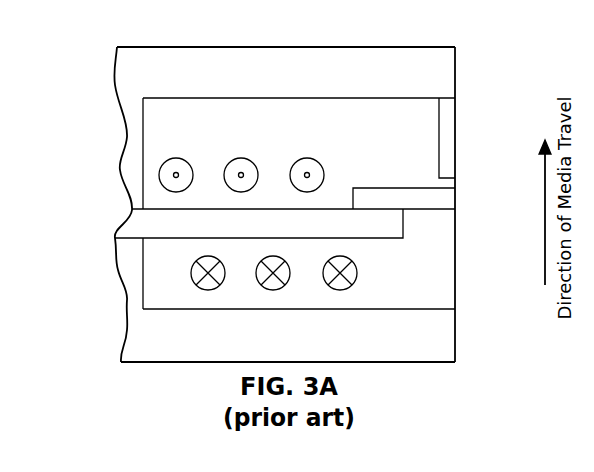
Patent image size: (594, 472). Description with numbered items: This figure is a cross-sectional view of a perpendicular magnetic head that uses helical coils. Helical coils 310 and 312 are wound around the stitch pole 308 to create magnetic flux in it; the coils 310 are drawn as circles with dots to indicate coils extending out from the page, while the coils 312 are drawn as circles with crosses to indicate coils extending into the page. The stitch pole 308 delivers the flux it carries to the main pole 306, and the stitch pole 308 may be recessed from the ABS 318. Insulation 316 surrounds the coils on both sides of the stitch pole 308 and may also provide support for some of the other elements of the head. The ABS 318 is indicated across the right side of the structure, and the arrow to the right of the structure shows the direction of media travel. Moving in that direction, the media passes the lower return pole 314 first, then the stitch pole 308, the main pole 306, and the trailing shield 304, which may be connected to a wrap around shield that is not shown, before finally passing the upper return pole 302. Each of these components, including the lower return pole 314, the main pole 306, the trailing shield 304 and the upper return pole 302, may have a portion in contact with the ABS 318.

The upper return pole 302 is at (369, 83).
The trailing shield 304 is at (456, 143).
The main pole 306 is at (456, 195).
The stitch pole 308 is at (318, 235).
The helical coils 310 is at (172, 158).
The helical coils 312 is at (193, 280).
The lower return pole 314 is at (318, 348).
The insulation 316 is at (406, 151).
The ABS 318 is at (462, 65).